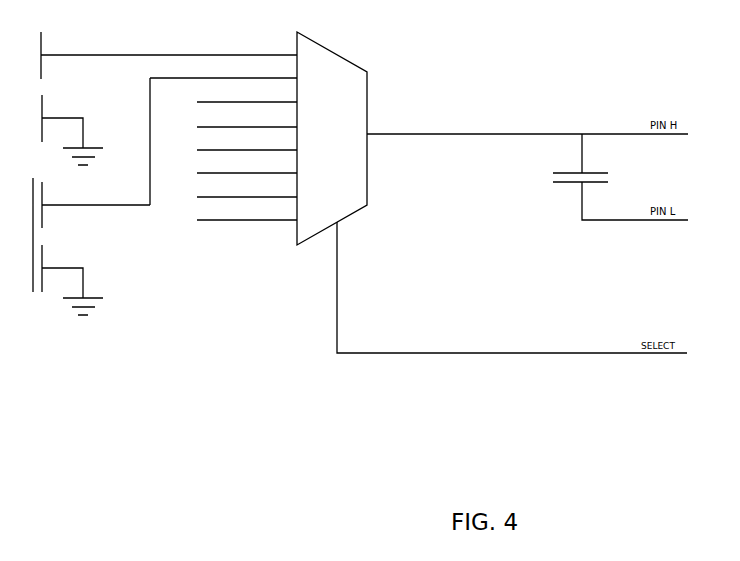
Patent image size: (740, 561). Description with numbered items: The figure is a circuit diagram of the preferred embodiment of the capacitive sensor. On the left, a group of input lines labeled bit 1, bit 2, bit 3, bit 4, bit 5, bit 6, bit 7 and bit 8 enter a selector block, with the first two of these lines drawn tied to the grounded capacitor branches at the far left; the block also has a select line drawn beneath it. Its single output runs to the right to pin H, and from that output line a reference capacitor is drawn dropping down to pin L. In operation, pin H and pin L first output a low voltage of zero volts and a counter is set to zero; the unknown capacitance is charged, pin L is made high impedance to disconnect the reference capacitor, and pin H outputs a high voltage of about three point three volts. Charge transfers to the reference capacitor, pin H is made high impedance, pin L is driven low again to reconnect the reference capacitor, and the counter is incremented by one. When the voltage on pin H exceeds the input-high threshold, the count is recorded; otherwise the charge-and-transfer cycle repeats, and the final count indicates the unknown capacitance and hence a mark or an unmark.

The bit 1 input line 1 is at (169, 55).
The bit 2 input line 2 is at (165, 178).
The bit 3 input line 3 is at (247, 95).
The bit 4 input line 4 is at (247, 120).
The bit 5 input line 5 is at (247, 143).
The bit 6 input line 6 is at (247, 166).
The bit 7 input line 7 is at (247, 190).
The bit 8 input line 8 is at (247, 213).